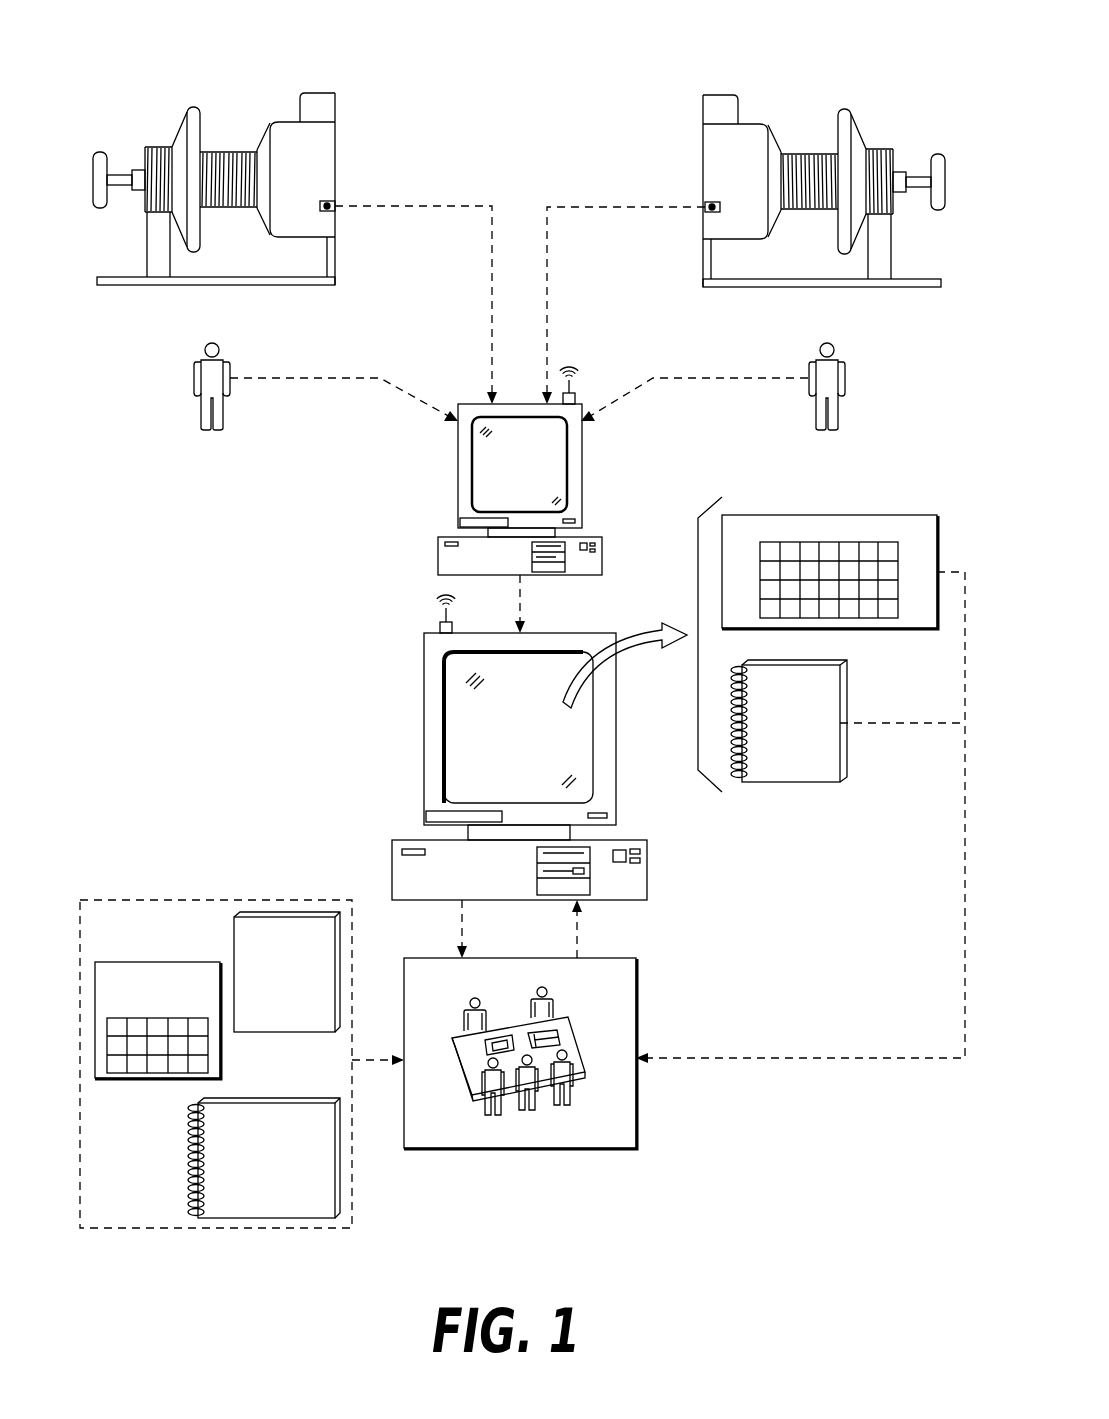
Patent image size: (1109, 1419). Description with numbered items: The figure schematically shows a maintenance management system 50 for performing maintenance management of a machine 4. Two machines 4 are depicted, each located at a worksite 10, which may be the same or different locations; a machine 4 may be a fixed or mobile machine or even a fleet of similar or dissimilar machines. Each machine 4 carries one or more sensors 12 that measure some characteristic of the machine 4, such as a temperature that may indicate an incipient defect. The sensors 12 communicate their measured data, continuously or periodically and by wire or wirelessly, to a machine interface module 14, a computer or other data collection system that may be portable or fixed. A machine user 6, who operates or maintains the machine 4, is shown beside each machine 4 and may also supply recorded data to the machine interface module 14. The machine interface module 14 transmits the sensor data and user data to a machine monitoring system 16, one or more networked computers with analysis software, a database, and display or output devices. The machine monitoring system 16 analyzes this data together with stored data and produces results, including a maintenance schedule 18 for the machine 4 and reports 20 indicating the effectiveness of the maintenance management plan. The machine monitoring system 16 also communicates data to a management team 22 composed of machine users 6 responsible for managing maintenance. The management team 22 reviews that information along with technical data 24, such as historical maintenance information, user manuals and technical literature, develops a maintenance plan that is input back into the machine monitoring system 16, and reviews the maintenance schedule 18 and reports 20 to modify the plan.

The maintenance management system 50 is at (801, 26).
The worksite 10 is at (519, 169).
The machine 4 is at (323, 138).
The sensor 12 is at (330, 193).
The machine user 6 is at (219, 345).
The machine interface module 14 is at (553, 455).
The machine monitoring system 16 is at (453, 742).
The maintenance schedule 18 is at (867, 515).
The report 20 is at (797, 770).
The management team 22 is at (637, 990).
The technical data 24 is at (177, 900).